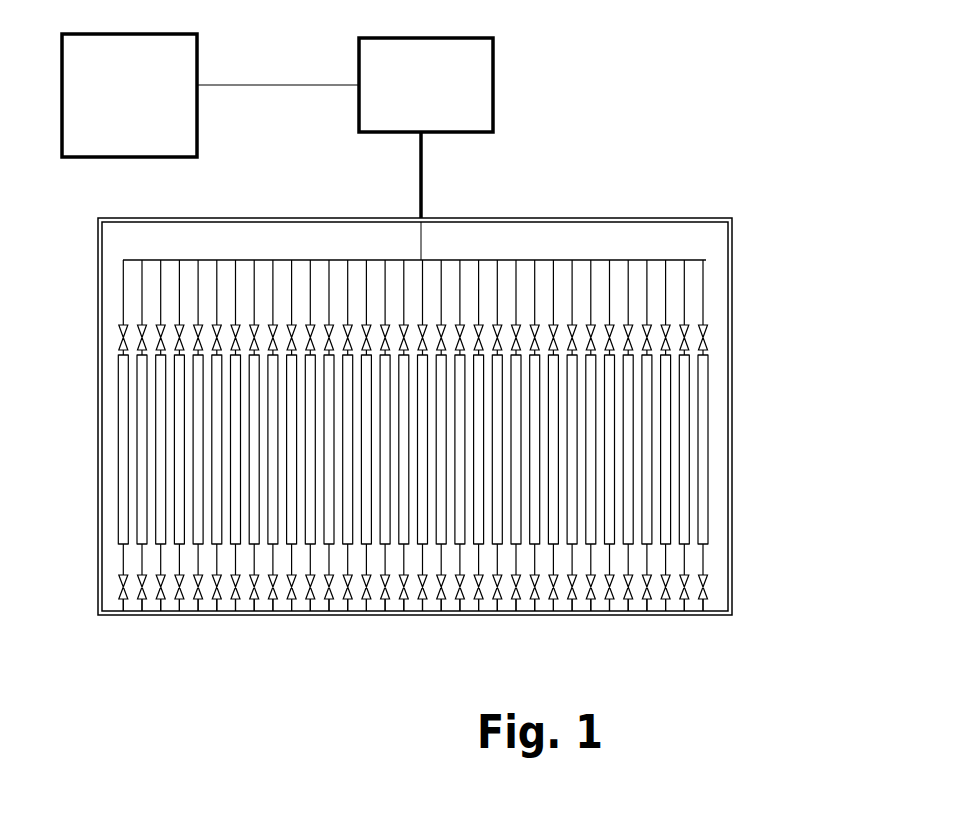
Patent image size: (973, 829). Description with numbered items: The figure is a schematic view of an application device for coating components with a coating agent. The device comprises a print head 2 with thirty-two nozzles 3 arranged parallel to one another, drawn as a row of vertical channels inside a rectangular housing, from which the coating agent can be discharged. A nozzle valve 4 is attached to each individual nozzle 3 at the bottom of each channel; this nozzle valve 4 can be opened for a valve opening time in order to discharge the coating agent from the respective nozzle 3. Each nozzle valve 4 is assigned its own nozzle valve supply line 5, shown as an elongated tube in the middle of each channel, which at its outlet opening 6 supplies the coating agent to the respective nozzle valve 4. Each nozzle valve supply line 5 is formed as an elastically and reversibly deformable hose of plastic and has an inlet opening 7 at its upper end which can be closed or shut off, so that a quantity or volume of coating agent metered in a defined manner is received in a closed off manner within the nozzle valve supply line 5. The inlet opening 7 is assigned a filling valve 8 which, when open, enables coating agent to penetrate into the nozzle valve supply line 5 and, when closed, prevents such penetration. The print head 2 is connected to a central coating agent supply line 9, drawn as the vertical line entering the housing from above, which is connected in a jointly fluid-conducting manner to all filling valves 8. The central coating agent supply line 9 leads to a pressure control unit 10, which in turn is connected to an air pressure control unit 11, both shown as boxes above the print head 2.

The print head 2 is at (732, 220).
The nozzles 3 is at (140, 613).
The nozzle valve 4 is at (707, 588).
The nozzle valve supply line 5 is at (706, 435).
The outlet opening 6 is at (707, 543).
The inlet opening 7 is at (706, 358).
The filling valve 8 is at (706, 333).
The central coating agent supply line 9 is at (424, 196).
The pressure control unit 10 is at (447, 94).
The air pressure control unit 11 is at (155, 83).